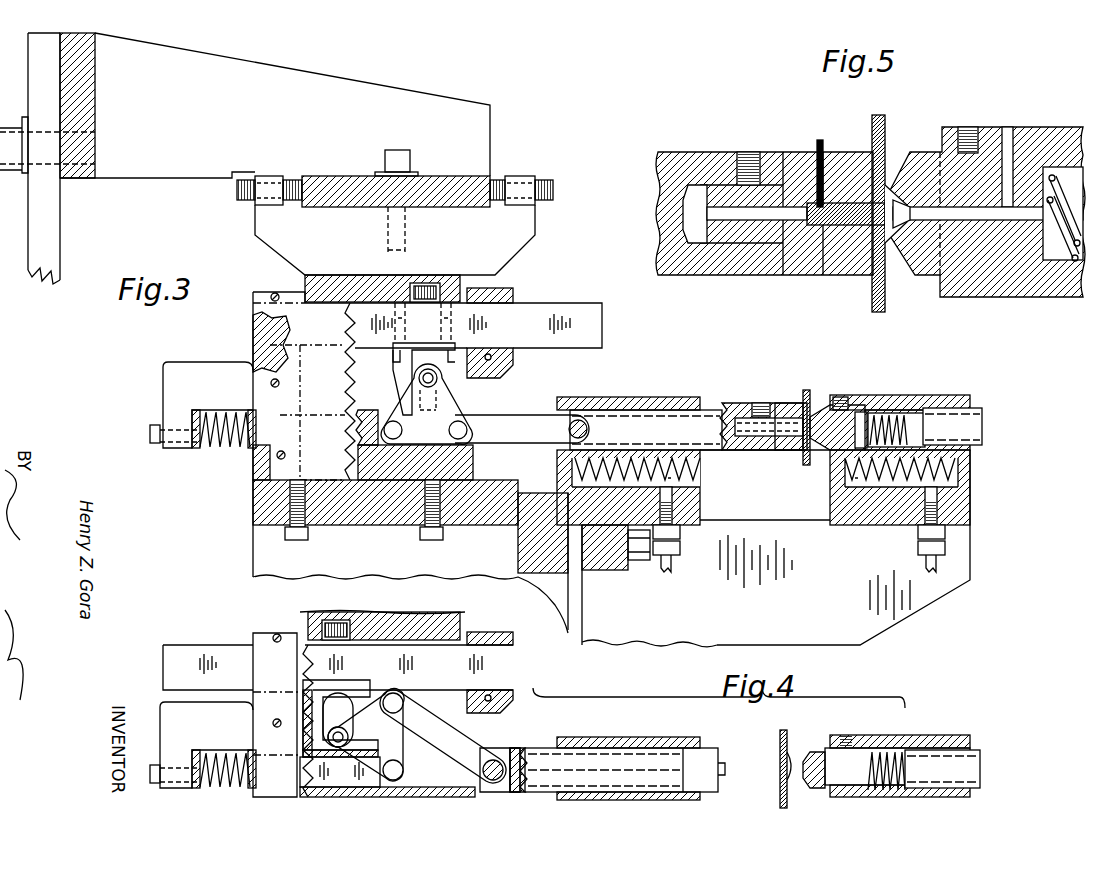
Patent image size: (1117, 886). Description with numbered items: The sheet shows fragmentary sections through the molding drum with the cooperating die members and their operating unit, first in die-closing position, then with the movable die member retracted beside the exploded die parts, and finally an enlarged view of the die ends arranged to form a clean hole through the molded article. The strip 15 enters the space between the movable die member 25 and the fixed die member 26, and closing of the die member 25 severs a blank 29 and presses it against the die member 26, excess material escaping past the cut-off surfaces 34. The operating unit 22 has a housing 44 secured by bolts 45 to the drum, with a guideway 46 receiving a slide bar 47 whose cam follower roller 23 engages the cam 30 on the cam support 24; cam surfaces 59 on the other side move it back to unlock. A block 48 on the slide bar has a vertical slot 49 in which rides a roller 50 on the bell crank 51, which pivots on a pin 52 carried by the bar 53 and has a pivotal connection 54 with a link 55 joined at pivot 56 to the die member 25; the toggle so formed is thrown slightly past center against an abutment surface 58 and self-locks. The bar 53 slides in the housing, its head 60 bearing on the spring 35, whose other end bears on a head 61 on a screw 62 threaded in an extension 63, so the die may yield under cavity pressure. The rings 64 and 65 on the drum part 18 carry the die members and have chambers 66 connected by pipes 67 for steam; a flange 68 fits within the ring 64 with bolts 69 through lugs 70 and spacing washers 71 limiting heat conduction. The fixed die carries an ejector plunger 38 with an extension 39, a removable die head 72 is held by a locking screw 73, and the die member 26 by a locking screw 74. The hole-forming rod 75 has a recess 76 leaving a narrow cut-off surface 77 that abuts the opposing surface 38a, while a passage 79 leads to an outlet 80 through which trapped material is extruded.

In FIG. 3, the strip 15 is at (806, 390).
In FIG. 5, the strip 15 is at (884, 120).
In FIG. 4, the strip 15 is at (779, 793).
In FIG. 3, the drum part 18 is at (980, 509).
In FIG. 3, the operating unit 22 is at (287, 315).
In FIG. 4, the operating unit 22 is at (283, 715).
In FIG. 3, the cam follower roller 23 is at (430, 282).
In FIG. 4, the cam follower roller 23 is at (345, 620).
In FIG. 3, the cam support 24 is at (482, 180).
In FIG. 3, the movable die member 25 is at (718, 403).
In FIG. 5, the movable die member 25 is at (775, 151).
In FIG. 4, the movable die member 25 is at (543, 748).
In FIG. 3, the fixed die member 26 is at (821, 404).
In FIG. 5, the fixed die member 26 is at (922, 152).
In FIG. 4, the fixed die member 26 is at (812, 751).
In FIG. 5, the blank 29 is at (862, 222).
In FIG. 3, the cam 30 is at (408, 290).
In FIG. 5, the cut-off surfaces 34 is at (893, 185).
In FIG. 3, the spring 35 is at (216, 449).
In FIG. 4, the spring 35 is at (220, 755).
In FIG. 3, the ejector plunger 38 is at (860, 412).
In FIG. 5, the ejector plunger 38 is at (980, 262).
In FIG. 5, the opposing surface 38a is at (920, 275).
In FIG. 3, the extension 39 is at (983, 424).
In FIG. 4, the extension 39 is at (975, 757).
In FIG. 3, the housing 44 is at (262, 468).
In FIG. 3, the bolts 45 is at (305, 538).
In FIG. 3, the guideway 46 is at (514, 365).
In FIG. 4, the guideway 46 is at (513, 706).
In FIG. 3, the slide bar 47 is at (573, 325).
In FIG. 4, the slide bar 47 is at (205, 657).
In FIG. 3, the block 48 is at (400, 366).
In FIG. 4, the block 48 is at (305, 706).
In FIG. 3, the vertical slot 49 is at (440, 368).
In FIG. 4, the vertical slot 49 is at (328, 722).
In FIG. 3, the roller 50 is at (418, 406).
In FIG. 4, the roller 50 is at (339, 727).
In FIG. 3, the bell crank 51 is at (470, 410).
In FIG. 4, the bell crank 51 is at (405, 715).
In FIG. 3, the pin 52 is at (390, 421).
In FIG. 4, the pin 52 is at (404, 771).
In FIG. 3, the bar 53 is at (364, 425).
In FIG. 4, the bar 53 is at (340, 782).
In FIG. 3, the pivotal connection 54 is at (452, 428).
In FIG. 4, the pivotal connection 54 is at (393, 698).
In FIG. 3, the link 55 is at (527, 425).
In FIG. 4, the link 55 is at (452, 738).
In FIG. 3, the pivot 56 is at (579, 420).
In FIG. 4, the pivot 56 is at (493, 760).
In FIG. 3, the abutment surface 58 is at (475, 462).
In FIG. 4, the cam surfaces 59 is at (365, 616).
In FIG. 3, the head 60 is at (251, 449).
In FIG. 4, the head 60 is at (250, 752).
In FIG. 3, the head 61 is at (196, 449).
In FIG. 4, the head 61 is at (197, 754).
In FIG. 3, the screw 62 is at (155, 445).
In FIG. 4, the screw 62 is at (156, 764).
In FIG. 3, the extension 63 is at (165, 384).
In FIG. 4, the extension 63 is at (165, 722).
In FIG. 3, the ring 64 is at (665, 397).
In FIG. 4, the ring 64 is at (620, 737).
In FIG. 3, the ring 65 is at (907, 395).
In FIG. 5, the ring 65 is at (1046, 127).
In FIG. 4, the ring 65 is at (905, 735).
In FIG. 3, the chambers 66 is at (668, 481).
In FIG. 3, the pipes 67 is at (672, 562).
In FIG. 3, the flange 68 is at (530, 560).
In FIG. 3, the bolts 69 is at (638, 562).
In FIG. 3, the lugs 70 is at (607, 572).
In FIG. 3, the spacing washers 71 is at (574, 580).
In FIG. 3, the removable die head 72 is at (779, 402).
In FIG. 5, the removable die head 72 is at (800, 151).
In FIG. 4, the removable die head 72 is at (705, 749).
In FIG. 3, the locking screw 73 is at (758, 402).
In FIG. 5, the locking screw 73 is at (745, 152).
In FIG. 3, the locking screw 74 is at (840, 397).
In FIG. 5, the locking screw 74 is at (968, 127).
In FIG. 3, the hole-forming rod 75 is at (788, 457).
In FIG. 5, the hole-forming rod 75 is at (840, 222).
In FIG. 5, the recess 76 is at (866, 160).
In FIG. 5, the cut-off surface 77 is at (892, 262).
In FIG. 5, the passage 79 is at (828, 203).
In FIG. 5, the outlet 80 is at (820, 139).